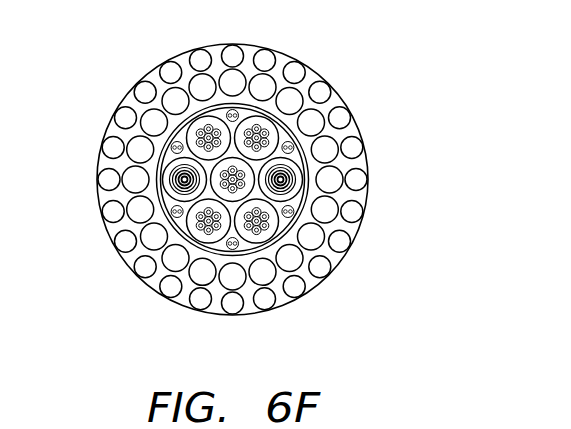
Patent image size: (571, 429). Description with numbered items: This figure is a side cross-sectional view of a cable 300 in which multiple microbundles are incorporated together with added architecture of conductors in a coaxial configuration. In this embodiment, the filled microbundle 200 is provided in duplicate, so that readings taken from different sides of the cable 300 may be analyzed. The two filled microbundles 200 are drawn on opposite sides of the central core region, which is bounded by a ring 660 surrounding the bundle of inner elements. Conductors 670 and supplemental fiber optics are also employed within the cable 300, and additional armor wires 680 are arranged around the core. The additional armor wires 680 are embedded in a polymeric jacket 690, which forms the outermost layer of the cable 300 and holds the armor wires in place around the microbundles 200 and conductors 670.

The cable 300 is at (368, 62).
The filled microbundle 200 is at (170, 179).
The inner jacket 660 is at (306, 208).
The conductors 670 is at (303, 253).
The additional armor wires 680 is at (125, 241).
The polymeric jacket 690 is at (147, 283).